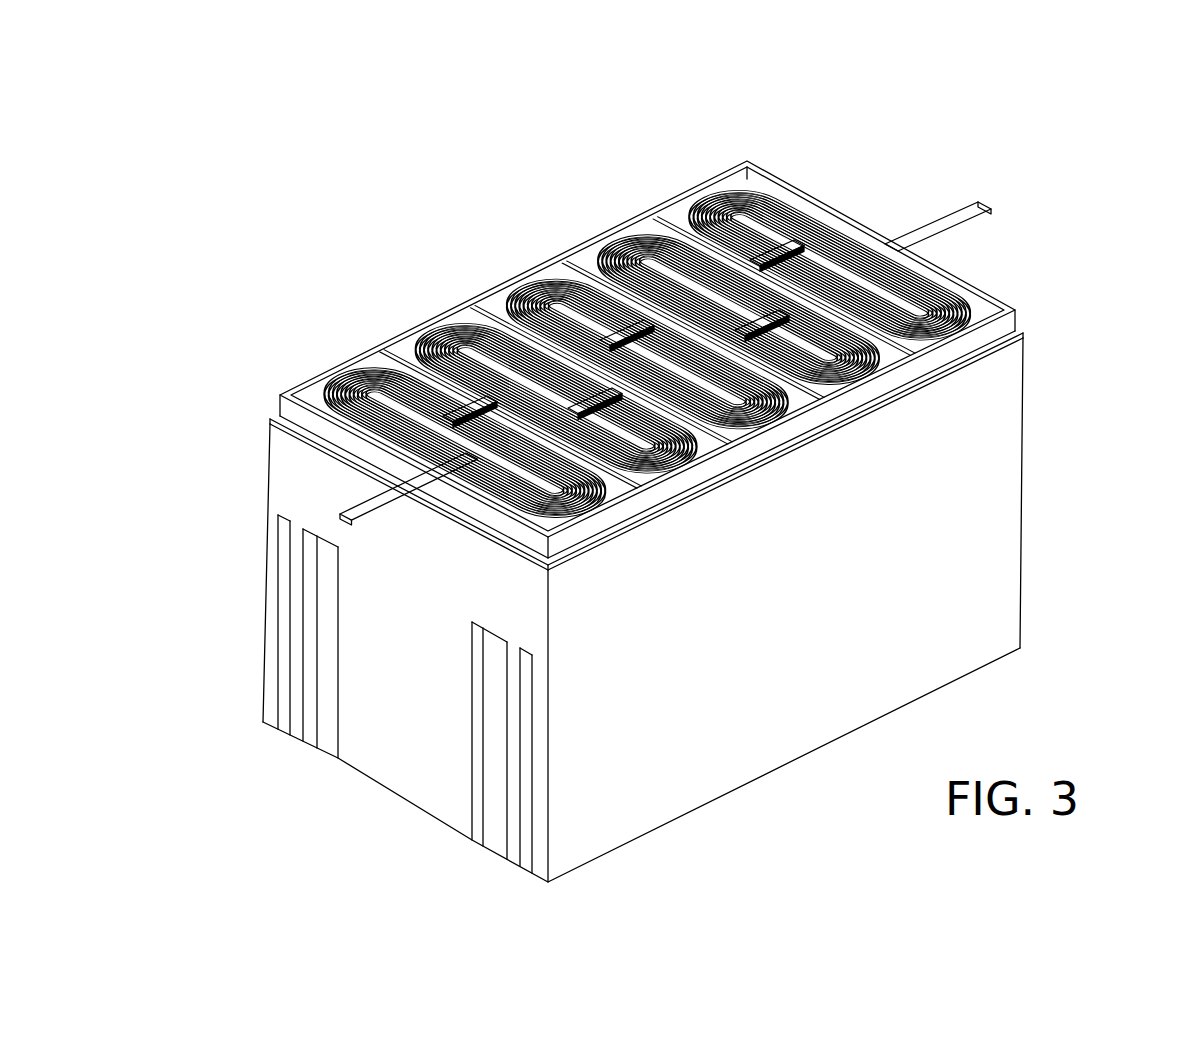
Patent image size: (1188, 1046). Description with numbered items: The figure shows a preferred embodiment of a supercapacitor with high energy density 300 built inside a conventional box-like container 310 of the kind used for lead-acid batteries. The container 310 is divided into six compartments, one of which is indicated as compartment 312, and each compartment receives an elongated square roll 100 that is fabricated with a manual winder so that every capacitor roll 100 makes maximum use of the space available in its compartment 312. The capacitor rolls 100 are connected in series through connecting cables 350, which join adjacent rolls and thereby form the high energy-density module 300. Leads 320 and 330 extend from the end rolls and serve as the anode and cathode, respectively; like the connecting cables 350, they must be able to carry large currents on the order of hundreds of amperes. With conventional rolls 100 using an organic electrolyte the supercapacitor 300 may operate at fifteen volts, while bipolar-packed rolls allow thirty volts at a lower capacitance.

The supercapacitor with high energy density 300 is at (1152, 64).
The box-like container 310 is at (1020, 623).
The compartment 312 is at (313, 392).
The elongated square roll 100 is at (400, 359).
The lead 320 is at (388, 525).
The lead 330 is at (977, 198).
The connecting cable 350 is at (778, 238).